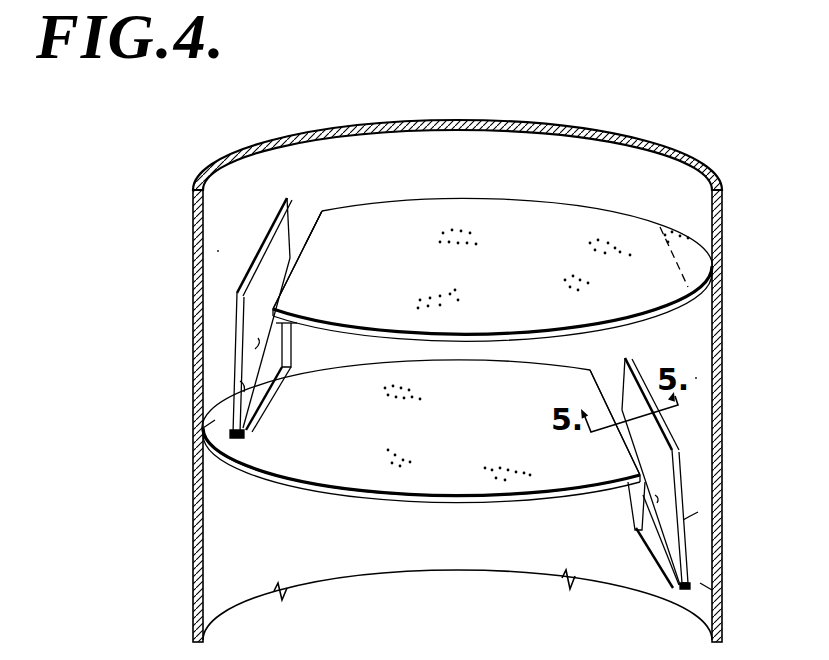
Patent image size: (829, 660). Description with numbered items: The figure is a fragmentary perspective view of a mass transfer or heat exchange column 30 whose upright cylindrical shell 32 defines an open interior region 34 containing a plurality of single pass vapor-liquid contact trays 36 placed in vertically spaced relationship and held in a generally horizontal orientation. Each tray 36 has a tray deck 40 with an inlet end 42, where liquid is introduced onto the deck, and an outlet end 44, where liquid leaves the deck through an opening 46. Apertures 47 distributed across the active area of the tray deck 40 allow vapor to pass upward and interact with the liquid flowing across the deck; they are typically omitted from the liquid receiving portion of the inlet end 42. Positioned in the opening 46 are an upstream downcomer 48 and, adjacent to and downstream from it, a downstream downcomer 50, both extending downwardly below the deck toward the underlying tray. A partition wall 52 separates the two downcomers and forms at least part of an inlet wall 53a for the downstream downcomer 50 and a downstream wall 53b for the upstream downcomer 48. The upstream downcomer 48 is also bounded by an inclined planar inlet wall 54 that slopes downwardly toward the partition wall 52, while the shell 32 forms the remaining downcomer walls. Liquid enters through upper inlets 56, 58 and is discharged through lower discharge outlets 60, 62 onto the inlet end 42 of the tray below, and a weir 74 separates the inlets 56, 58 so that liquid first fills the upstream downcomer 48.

The mass transfer or heat exchange column 30 is at (486, 372).
The upright cylindrical shell 32 is at (724, 296).
The open interior region 34 is at (597, 160).
The vapor-liquid contact tray 36 is at (457, 343).
The tray deck 40 is at (487, 201).
The inlet end 42 is at (682, 240).
The outlet end 44 is at (333, 210).
The opening 46 is at (470, 399).
The apertures 47 is at (488, 242).
The upstream downcomer 48 is at (306, 348).
The downstream downcomer 50 is at (240, 318).
The partition wall 52 is at (256, 349).
The inlet wall 53a is at (240, 381).
The downstream wall 53b is at (262, 403).
The inlet wall 54 is at (278, 374).
The upper inlet 56 is at (305, 245).
The upper inlet 58 is at (217, 244).
The lower discharge outlet 60 is at (246, 448).
The lower discharge outlet 62 is at (212, 428).
The weir 74 is at (284, 209).